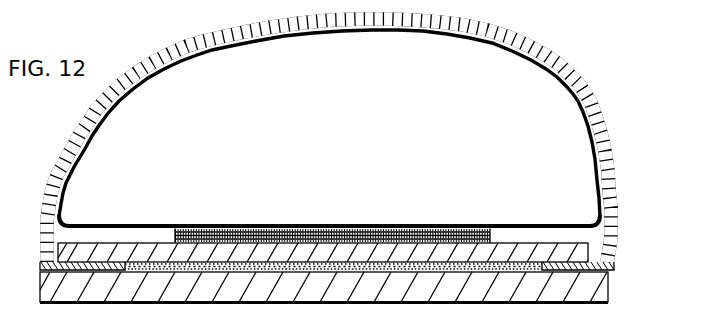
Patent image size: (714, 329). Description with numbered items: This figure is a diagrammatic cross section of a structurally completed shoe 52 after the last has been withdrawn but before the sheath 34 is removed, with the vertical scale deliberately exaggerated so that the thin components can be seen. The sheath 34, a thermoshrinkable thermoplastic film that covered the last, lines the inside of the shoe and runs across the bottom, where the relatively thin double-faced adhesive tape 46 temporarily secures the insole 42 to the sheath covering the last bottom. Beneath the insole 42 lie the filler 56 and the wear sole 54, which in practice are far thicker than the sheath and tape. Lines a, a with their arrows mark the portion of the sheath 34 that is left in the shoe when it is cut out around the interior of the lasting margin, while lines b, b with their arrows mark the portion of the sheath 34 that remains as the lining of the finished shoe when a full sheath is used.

The sheath 34 is at (292, 35).
The insole 42 is at (580, 257).
The double-faced adhesive tape 46 is at (497, 238).
The structurally completed shoe 52 is at (612, 112).
The wear sole 54 is at (582, 292).
The filler 56 is at (287, 268).
The lines a— a is at (149, 210).
The lines b— b is at (160, 80).